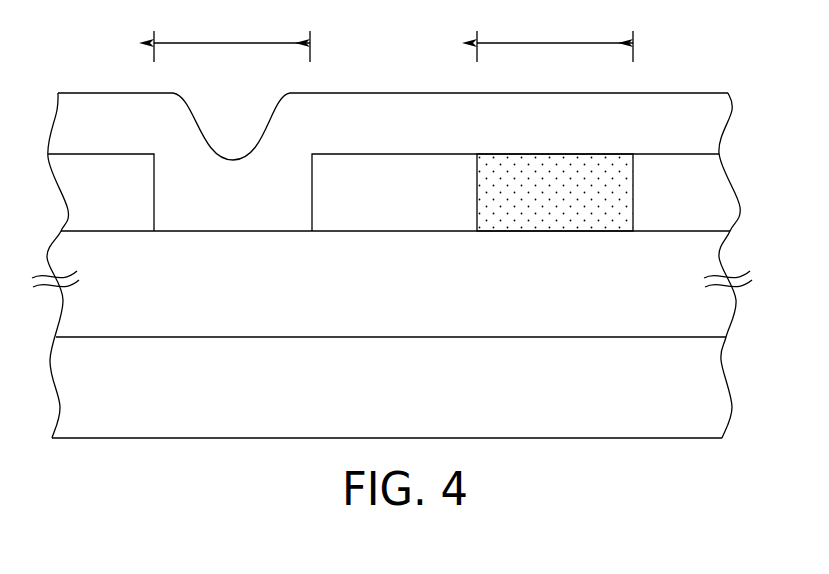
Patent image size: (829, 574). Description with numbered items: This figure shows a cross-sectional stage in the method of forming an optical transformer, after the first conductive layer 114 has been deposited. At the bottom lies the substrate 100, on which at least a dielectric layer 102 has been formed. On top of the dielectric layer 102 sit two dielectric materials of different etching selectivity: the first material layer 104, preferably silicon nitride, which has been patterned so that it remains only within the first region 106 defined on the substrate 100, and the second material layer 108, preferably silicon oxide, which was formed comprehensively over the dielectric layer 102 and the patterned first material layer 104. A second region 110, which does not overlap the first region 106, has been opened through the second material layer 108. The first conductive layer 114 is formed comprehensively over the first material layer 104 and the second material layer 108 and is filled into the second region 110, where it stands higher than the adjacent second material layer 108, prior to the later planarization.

The substrate 100 is at (377, 407).
The dielectric layer 102 is at (377, 306).
The first material layer 104 is at (535, 205).
The first region 106 is at (555, 37).
The second material layer 108 is at (377, 205).
The second region 110 is at (232, 37).
The first conductive layer 114 is at (377, 138).